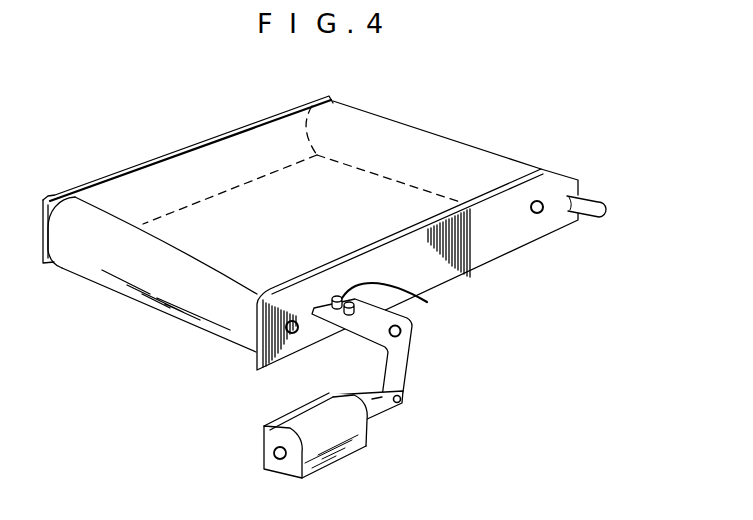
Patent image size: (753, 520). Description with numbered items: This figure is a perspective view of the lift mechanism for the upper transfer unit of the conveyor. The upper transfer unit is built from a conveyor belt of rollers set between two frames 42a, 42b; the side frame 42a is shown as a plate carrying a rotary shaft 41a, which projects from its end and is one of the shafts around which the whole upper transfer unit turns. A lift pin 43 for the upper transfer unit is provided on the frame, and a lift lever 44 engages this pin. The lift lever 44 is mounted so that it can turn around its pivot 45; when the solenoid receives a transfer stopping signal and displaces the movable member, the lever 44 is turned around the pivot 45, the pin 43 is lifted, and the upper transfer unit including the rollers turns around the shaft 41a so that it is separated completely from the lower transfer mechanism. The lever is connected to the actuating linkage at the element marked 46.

The rotary shaft 41a is at (587, 213).
The frame 42a is at (525, 235).
The frame 42b is at (244, 126).
The lift pin 43 is at (415, 296).
The lift lever 44 is at (399, 312).
The pivot 45 is at (401, 333).
The hinge pin 46 is at (401, 401).